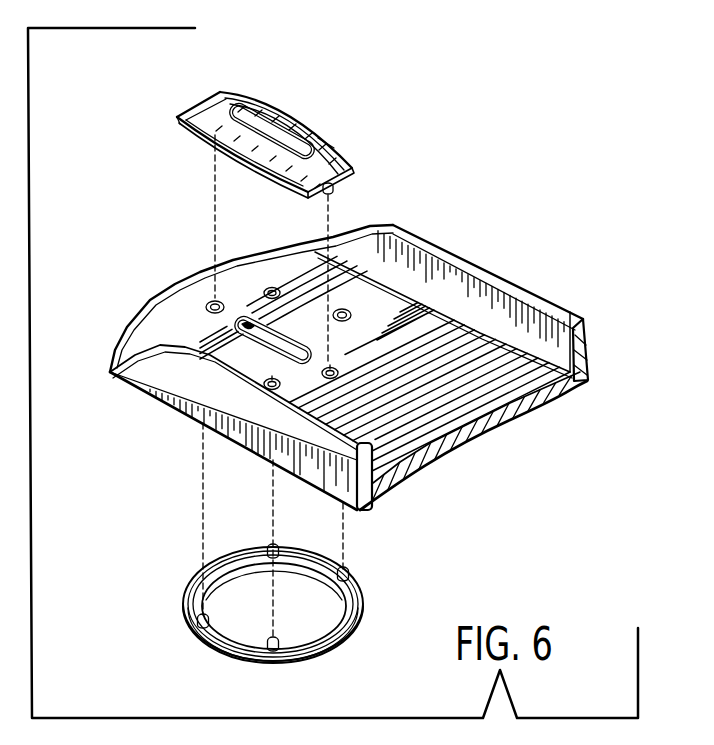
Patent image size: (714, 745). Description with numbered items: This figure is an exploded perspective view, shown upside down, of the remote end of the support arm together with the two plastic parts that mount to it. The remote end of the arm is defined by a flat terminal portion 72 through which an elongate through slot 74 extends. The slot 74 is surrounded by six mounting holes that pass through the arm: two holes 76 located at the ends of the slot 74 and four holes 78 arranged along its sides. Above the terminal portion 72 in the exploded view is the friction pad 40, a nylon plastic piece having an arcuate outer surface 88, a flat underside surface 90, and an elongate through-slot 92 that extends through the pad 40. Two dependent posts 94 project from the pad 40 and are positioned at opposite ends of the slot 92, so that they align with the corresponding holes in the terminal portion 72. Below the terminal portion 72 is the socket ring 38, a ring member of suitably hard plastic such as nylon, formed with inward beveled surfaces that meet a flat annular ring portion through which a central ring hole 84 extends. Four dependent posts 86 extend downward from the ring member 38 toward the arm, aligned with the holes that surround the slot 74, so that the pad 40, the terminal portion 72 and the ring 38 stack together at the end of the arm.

The socket ring 38 is at (328, 658).
The friction pad 40 is at (296, 96).
The flat terminal portion 72 is at (133, 326).
The elongate through slot 74 is at (243, 323).
The mounting holes 76 is at (210, 302).
The mounting holes 78 is at (271, 288).
The central ring hole 84 is at (297, 618).
The dependent posts 86 is at (279, 549).
The arcuate outer surface 88 is at (327, 142).
The flat underside surface 90 is at (193, 131).
The elongate through-slot 92 is at (242, 110).
The dependent posts 94 is at (335, 190).